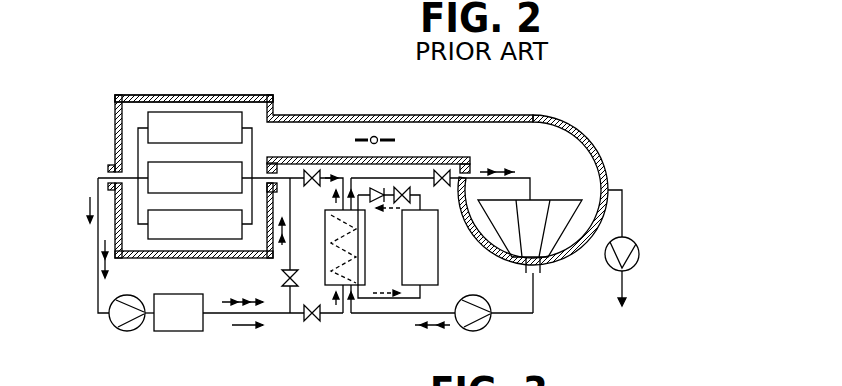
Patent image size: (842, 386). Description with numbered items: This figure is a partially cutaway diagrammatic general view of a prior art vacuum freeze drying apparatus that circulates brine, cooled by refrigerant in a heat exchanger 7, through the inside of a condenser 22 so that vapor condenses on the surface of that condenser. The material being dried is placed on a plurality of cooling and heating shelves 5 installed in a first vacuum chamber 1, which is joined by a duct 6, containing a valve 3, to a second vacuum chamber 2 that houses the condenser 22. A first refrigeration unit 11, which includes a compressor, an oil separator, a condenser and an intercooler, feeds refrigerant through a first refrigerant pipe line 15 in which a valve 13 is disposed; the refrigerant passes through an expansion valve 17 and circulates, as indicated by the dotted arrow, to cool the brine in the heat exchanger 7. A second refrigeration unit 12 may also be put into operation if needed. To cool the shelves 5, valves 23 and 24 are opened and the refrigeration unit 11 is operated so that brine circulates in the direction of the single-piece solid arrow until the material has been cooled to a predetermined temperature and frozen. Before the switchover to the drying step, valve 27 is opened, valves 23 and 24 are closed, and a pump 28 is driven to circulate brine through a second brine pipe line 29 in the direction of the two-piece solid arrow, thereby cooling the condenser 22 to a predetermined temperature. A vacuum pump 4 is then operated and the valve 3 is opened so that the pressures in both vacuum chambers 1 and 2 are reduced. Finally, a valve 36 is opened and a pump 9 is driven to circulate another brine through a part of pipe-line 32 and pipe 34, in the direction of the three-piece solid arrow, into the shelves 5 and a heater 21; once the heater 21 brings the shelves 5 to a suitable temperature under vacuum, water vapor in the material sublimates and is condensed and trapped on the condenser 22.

The first vacuum chamber 1 is at (253, 97).
The second refrigeration unit 12 is at (253, 97).
The vacuum chamber 2 is at (562, 142).
The valve 3 is at (383, 138).
The vacuum pump 4 is at (641, 256).
The cooling and heating shelves 5 is at (204, 140).
The duct 6 is at (353, 133).
The heat exchanger 7 is at (325, 238).
The pump 9 is at (127, 331).
The first refrigeration unit 11 is at (438, 266).
The valve 13 is at (403, 188).
The first refrigerant pipe line 15 is at (383, 314).
The expansion valve 17 is at (381, 200).
The heater 21 is at (178, 333).
The condenser 22 is at (560, 198).
The valve 23 is at (310, 168).
The valve 24 is at (314, 322).
The valve 27 is at (442, 169).
The pump 28 is at (491, 319).
The second brine pipe line 29 is at (533, 295).
The pipe-line 32 is at (98, 262).
The pipe 34 is at (283, 265).
The valve 36 is at (308, 319).